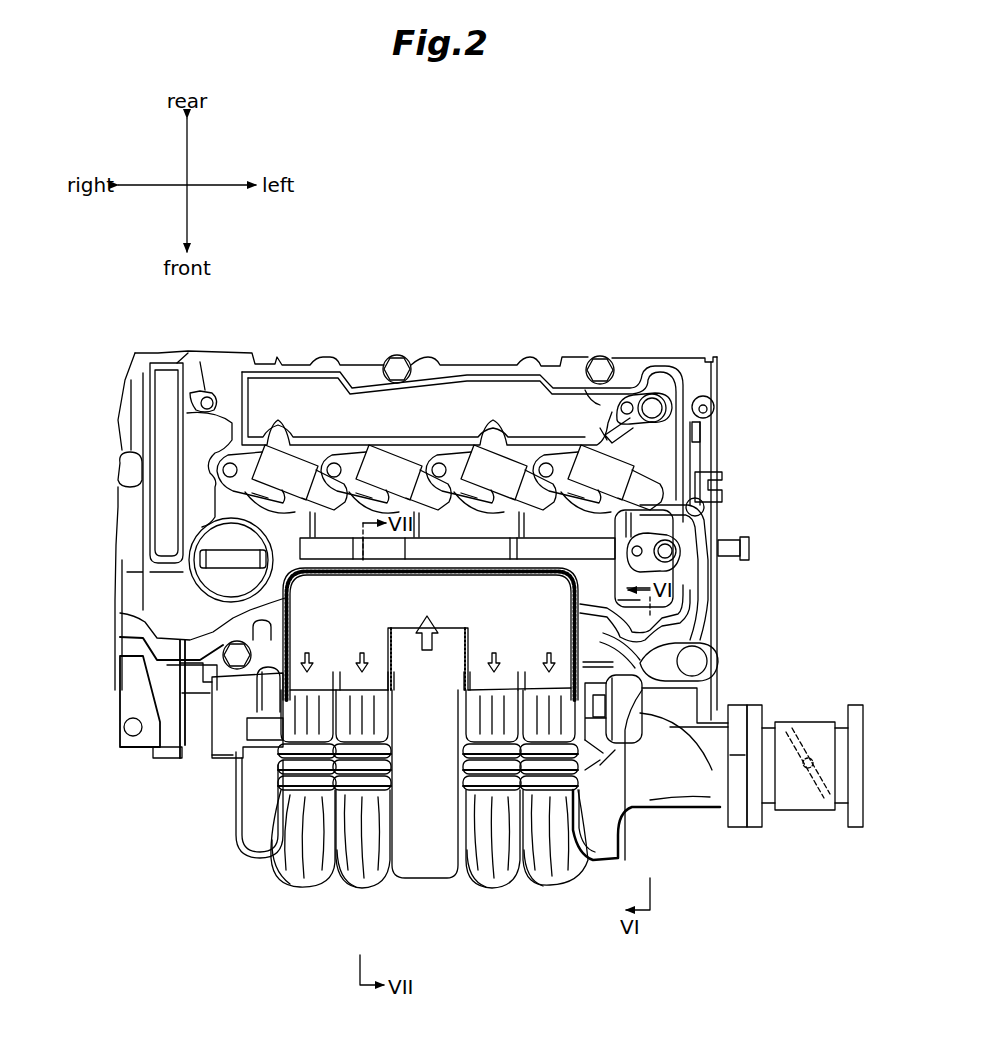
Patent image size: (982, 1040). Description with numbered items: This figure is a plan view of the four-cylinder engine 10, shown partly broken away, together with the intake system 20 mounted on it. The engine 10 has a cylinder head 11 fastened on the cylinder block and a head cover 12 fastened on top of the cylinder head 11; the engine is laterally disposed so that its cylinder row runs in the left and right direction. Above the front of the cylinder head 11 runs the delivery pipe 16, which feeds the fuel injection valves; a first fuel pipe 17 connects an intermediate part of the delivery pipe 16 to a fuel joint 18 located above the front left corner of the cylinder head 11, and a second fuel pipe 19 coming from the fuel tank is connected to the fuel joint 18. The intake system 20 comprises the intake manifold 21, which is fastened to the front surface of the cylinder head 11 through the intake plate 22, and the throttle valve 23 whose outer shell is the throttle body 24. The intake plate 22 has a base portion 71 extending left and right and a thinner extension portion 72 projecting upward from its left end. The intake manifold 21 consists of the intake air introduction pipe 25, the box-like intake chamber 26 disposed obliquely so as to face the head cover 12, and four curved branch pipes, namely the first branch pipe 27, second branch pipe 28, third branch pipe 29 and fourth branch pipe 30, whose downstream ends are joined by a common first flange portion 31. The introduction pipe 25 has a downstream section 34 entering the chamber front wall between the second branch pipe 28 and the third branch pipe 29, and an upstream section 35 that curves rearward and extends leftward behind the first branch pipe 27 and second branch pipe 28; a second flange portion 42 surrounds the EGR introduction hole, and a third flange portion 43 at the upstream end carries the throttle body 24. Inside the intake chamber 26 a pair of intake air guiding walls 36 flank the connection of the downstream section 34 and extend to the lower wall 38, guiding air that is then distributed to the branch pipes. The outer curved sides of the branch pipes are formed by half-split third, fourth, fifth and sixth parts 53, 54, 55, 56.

The engine 10 is at (140, 327).
The cylinder head 11 is at (712, 620).
The head cover 12 is at (305, 385).
The delivery pipe 16 is at (225, 705).
The first fuel pipe 17 is at (637, 720).
The fuel joint 18 is at (700, 661).
The second fuel pipe 19 is at (703, 580).
The intake system 20 is at (172, 818).
The intake manifold 21 is at (236, 830).
The intake plate 22 is at (207, 725).
The throttle valve 23 is at (800, 748).
The throttle body 24 is at (813, 808).
The intake air introduction pipe 25 is at (415, 880).
The intake chamber 26 is at (575, 588).
The first branch pipe 27 is at (588, 884).
The second branch pipe 28 is at (498, 882).
The third branch pipe 29 is at (365, 882).
The fourth branch pipe 30 is at (288, 882).
The first flange portion 31 is at (224, 757).
The downstream section 34 is at (425, 880).
The upstream section 35 is at (697, 790).
The intake air guiding walls 36 is at (389, 628).
The lower wall 38 is at (340, 635).
The second flange portion 42 is at (712, 770).
The third flange portion 43 is at (742, 810).
The third part 53 is at (556, 884).
The fourth part 54 is at (470, 883).
The fifth part 55 is at (348, 882).
The sixth part 56 is at (258, 883).
The base portion 71 is at (262, 703).
The extension portion 72 is at (690, 703).